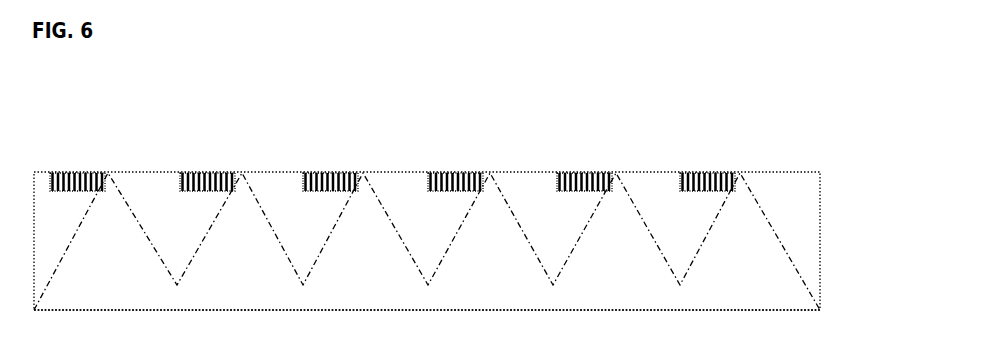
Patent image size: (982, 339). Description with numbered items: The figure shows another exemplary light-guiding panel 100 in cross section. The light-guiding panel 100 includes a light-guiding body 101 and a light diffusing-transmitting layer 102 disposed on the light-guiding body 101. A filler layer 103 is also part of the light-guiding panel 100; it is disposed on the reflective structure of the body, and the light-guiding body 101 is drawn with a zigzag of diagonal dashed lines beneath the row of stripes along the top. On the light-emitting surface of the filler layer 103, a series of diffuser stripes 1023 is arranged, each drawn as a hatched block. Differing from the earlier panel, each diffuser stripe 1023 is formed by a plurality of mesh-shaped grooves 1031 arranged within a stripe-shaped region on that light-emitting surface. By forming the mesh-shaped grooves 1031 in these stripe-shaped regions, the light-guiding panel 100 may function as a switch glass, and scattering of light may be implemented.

The light-guiding panel 100 is at (842, 108).
The light-guiding body 101 is at (797, 262).
The light diffusing-transmitting layer 102 is at (736, 169).
The filler layer 103 is at (790, 222).
The diffuser stripe 1023 is at (623, 91).
The mesh-shaped grooves 1031 is at (610, 170).